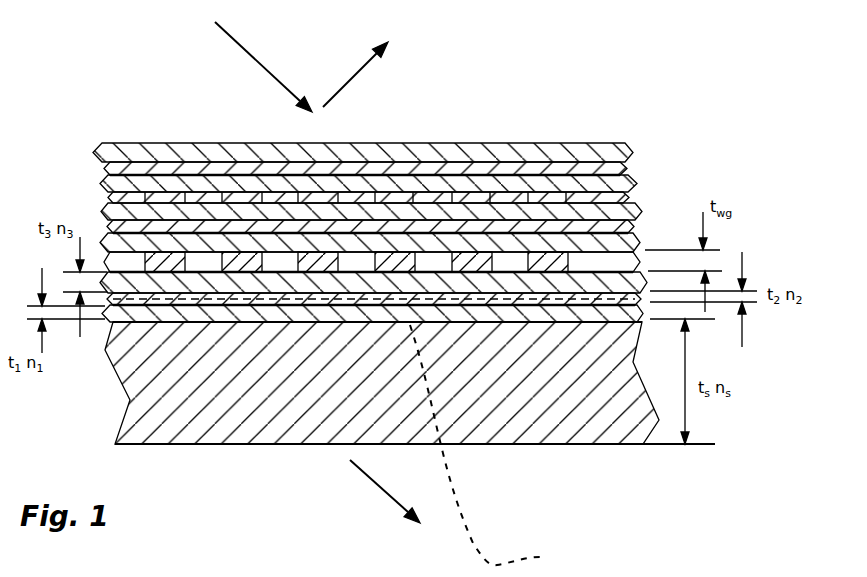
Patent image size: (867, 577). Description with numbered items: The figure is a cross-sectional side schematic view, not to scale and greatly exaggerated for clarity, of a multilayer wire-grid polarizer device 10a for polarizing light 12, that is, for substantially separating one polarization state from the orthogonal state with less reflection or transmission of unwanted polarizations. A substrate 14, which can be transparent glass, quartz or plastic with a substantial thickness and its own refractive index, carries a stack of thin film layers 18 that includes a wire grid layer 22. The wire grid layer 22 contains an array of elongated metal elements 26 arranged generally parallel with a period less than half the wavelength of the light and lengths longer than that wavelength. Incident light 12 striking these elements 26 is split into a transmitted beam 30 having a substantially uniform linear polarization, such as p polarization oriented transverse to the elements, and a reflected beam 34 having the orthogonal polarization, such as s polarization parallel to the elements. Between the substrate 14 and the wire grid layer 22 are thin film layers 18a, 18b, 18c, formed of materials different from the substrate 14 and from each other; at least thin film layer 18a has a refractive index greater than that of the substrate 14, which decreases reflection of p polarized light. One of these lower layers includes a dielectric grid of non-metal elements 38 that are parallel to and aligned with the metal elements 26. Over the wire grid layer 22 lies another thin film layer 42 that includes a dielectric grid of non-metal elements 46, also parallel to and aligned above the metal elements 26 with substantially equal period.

The multilayer wire-grid polarizer device 10a is at (248, 470).
The light 12 is at (267, 70).
The substrate 14 is at (602, 443).
The thin film layers 18 is at (655, 169).
The thin film layer 18a is at (581, 308).
The thin film layer 18b is at (520, 296).
The thin film layer 18c is at (607, 280).
The wire grid layer 22 is at (282, 260).
The elongated metal elements 26 is at (225, 268).
The transmitted beam 30 is at (378, 492).
The reflected beam 34 is at (348, 80).
The non-metal elements 38 is at (495, 451).
The other thin film layer 42 is at (570, 143).
The non-metal elements 46 is at (547, 197).